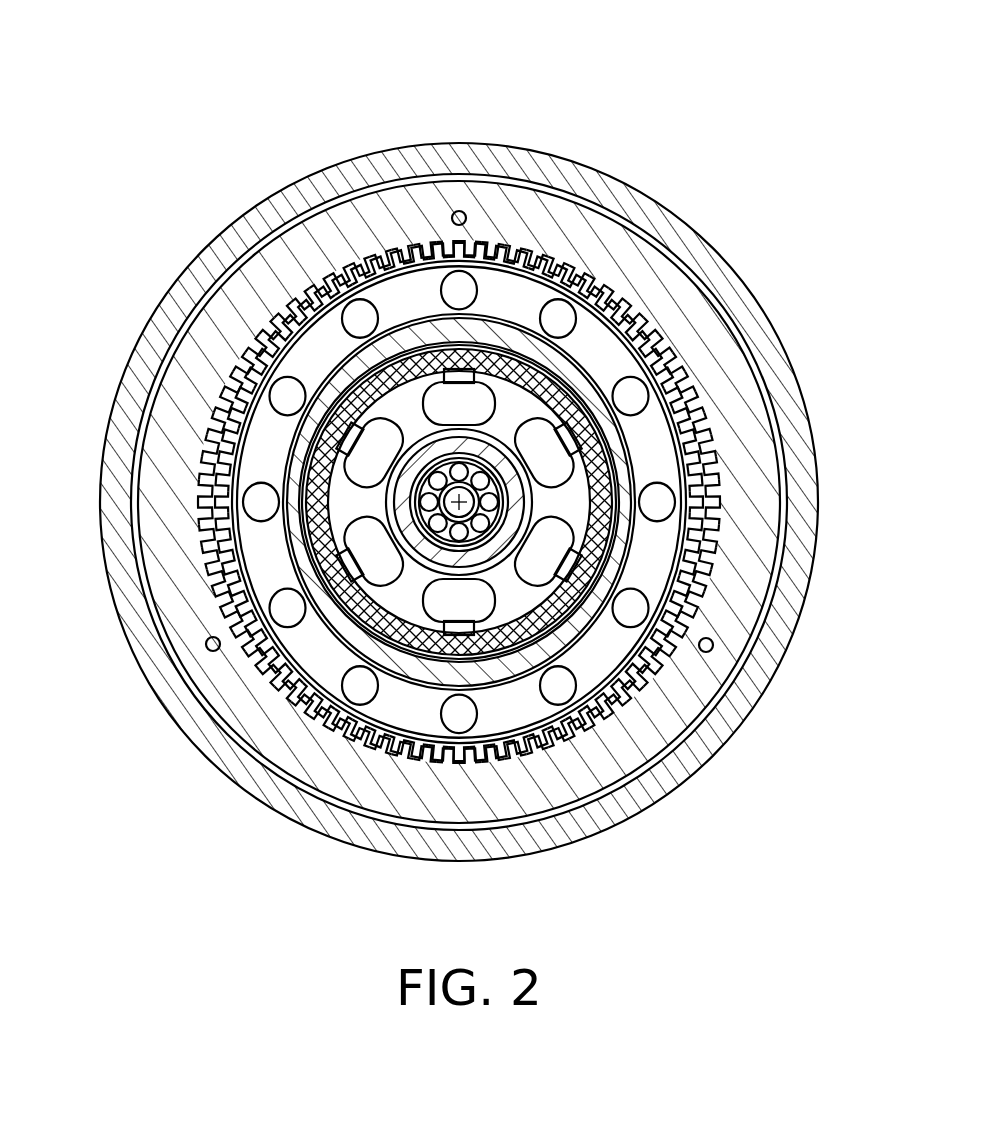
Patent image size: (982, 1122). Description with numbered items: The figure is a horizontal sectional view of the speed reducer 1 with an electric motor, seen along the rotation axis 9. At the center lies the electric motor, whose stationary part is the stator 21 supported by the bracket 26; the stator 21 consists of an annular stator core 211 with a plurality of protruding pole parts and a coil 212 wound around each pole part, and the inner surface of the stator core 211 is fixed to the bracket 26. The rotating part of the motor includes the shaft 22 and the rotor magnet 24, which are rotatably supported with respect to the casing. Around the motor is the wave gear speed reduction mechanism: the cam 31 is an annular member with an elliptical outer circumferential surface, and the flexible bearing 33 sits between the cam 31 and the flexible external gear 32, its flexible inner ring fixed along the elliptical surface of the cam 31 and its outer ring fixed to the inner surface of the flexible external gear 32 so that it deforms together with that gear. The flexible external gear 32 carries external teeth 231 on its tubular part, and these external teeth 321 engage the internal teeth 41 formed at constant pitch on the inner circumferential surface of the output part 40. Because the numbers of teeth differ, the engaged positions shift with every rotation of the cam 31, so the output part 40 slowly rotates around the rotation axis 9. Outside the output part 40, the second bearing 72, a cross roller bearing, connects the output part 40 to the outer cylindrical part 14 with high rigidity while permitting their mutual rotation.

The speed reducer with an electric motor 1 is at (425, 101).
The rotation axis 9 is at (464, 496).
The outer cylindrical part 14 is at (345, 183).
The second bearing 72 is at (235, 262).
The output part 40 is at (636, 268).
The internal teeth 41 is at (702, 407).
The flexible external gear 32 is at (672, 364).
The external teeth 321 is at (711, 452).
The flexible bearing 33 is at (287, 394).
The shaft 22 is at (340, 630).
The cam 31 is at (405, 663).
The external teeth 231 is at (516, 668).
The stator 21 is at (750, 795).
The stator core 211 is at (545, 553).
The coil 212 is at (493, 564).
The bracket 26 is at (402, 498).
The rotor magnet 24 is at (713, 645).